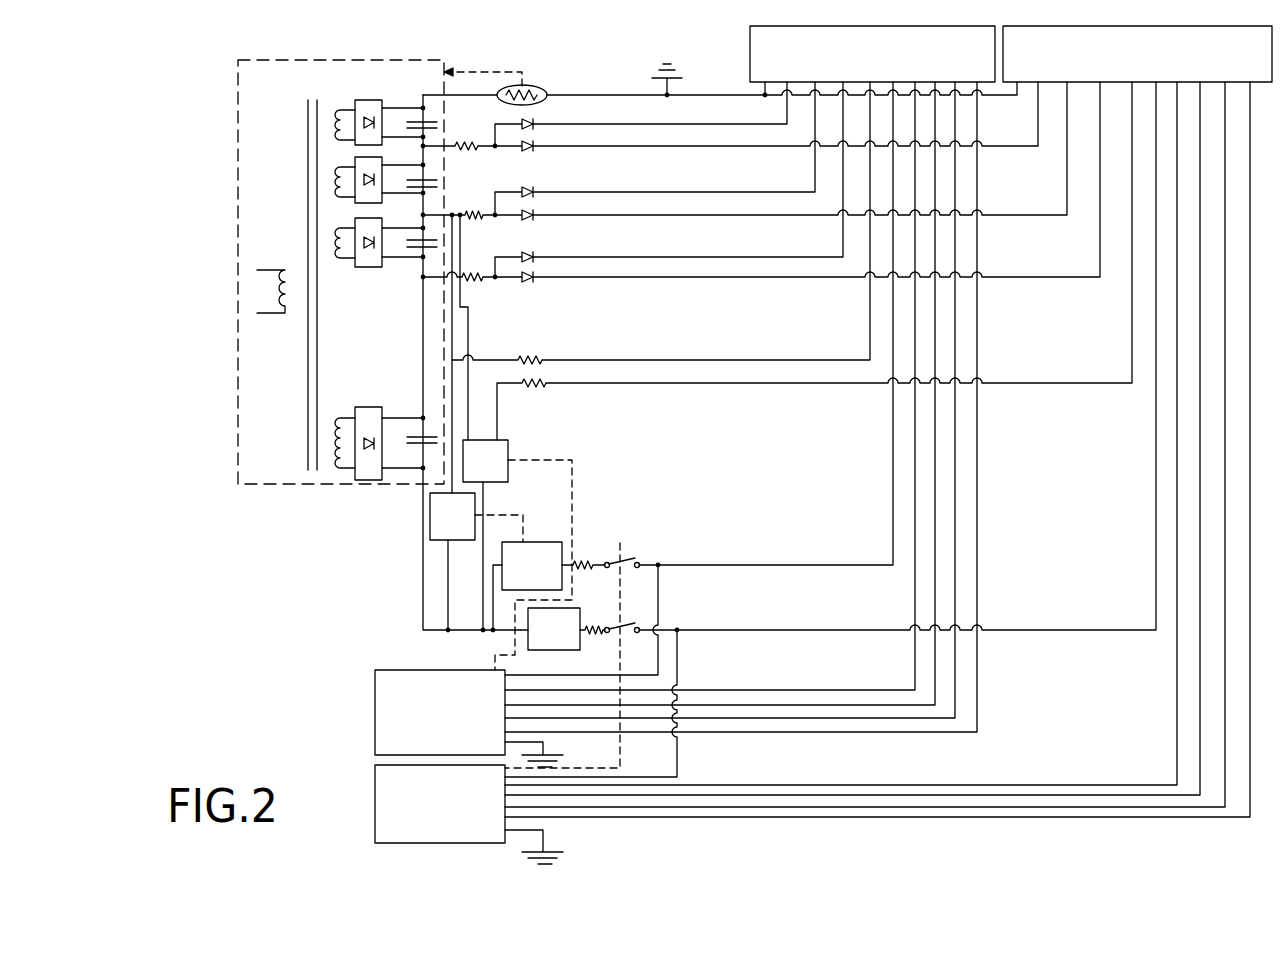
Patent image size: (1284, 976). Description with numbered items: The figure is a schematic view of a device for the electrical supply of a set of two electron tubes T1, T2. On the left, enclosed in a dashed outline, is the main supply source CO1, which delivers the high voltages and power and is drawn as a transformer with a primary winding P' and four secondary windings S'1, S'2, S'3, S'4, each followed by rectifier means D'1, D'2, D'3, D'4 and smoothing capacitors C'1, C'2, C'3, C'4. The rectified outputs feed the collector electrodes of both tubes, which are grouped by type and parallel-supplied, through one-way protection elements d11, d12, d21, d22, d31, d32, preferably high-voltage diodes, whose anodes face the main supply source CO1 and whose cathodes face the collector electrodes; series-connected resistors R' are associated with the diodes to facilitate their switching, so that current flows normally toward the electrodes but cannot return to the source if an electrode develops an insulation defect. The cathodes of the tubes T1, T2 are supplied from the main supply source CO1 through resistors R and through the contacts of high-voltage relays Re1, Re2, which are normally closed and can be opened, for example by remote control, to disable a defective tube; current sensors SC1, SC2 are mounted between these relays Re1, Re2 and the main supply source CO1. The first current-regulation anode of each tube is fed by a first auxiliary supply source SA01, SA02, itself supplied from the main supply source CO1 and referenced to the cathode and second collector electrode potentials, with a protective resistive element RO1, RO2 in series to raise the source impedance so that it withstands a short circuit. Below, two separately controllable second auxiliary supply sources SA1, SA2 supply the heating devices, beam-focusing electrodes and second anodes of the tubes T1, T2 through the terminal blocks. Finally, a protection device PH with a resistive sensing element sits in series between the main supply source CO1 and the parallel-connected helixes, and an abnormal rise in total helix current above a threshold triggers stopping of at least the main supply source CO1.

The main supply source CO1 is at (326, 60).
The protection device PH is at (532, 85).
The primary winding P' is at (271, 272).
The secondary winding S'1 is at (335, 105).
The secondary winding S'2 is at (335, 171).
The secondary winding S'3 is at (335, 228).
The secondary winding S'4 is at (335, 423).
The rectifier means D'1 is at (389, 108).
The rectifier means D'2 is at (389, 171).
The rectifier means D'3 is at (389, 232).
The rectifier means D'4 is at (389, 429).
The capacitor C'1 is at (440, 114).
The capacitor C'2 is at (440, 172).
The capacitor C'3 is at (411, 262).
The capacitor C'4 is at (411, 450).
The series-connected resistor R' is at (460, 210).
The one-way protection element d11 is at (538, 120).
The one-way protection element d12 is at (538, 142).
The one-way protection element d21 is at (538, 188).
The one-way protection element d22 is at (538, 212).
The one-way protection element d31 is at (538, 254).
The one-way protection element d32 is at (538, 274).
The resistive element RO1 is at (534, 356).
The resistive element RO2 is at (536, 390).
The first auxiliary supply source SA01 is at (476, 561).
The first auxiliary supply source SA02 is at (517, 555).
The current sensor SC1 is at (527, 586).
The current sensor SC2 is at (554, 629).
The resistor R is at (583, 585).
The high-voltage relay Re1 is at (633, 562).
The high-voltage relay Re2 is at (633, 627).
The second auxiliary supply source SA1 is at (676, 424).
The second auxiliary supply source SA2 is at (812, 473).
The electron tube T1 is at (872, 60).
The electron tube T2 is at (1137, 54).